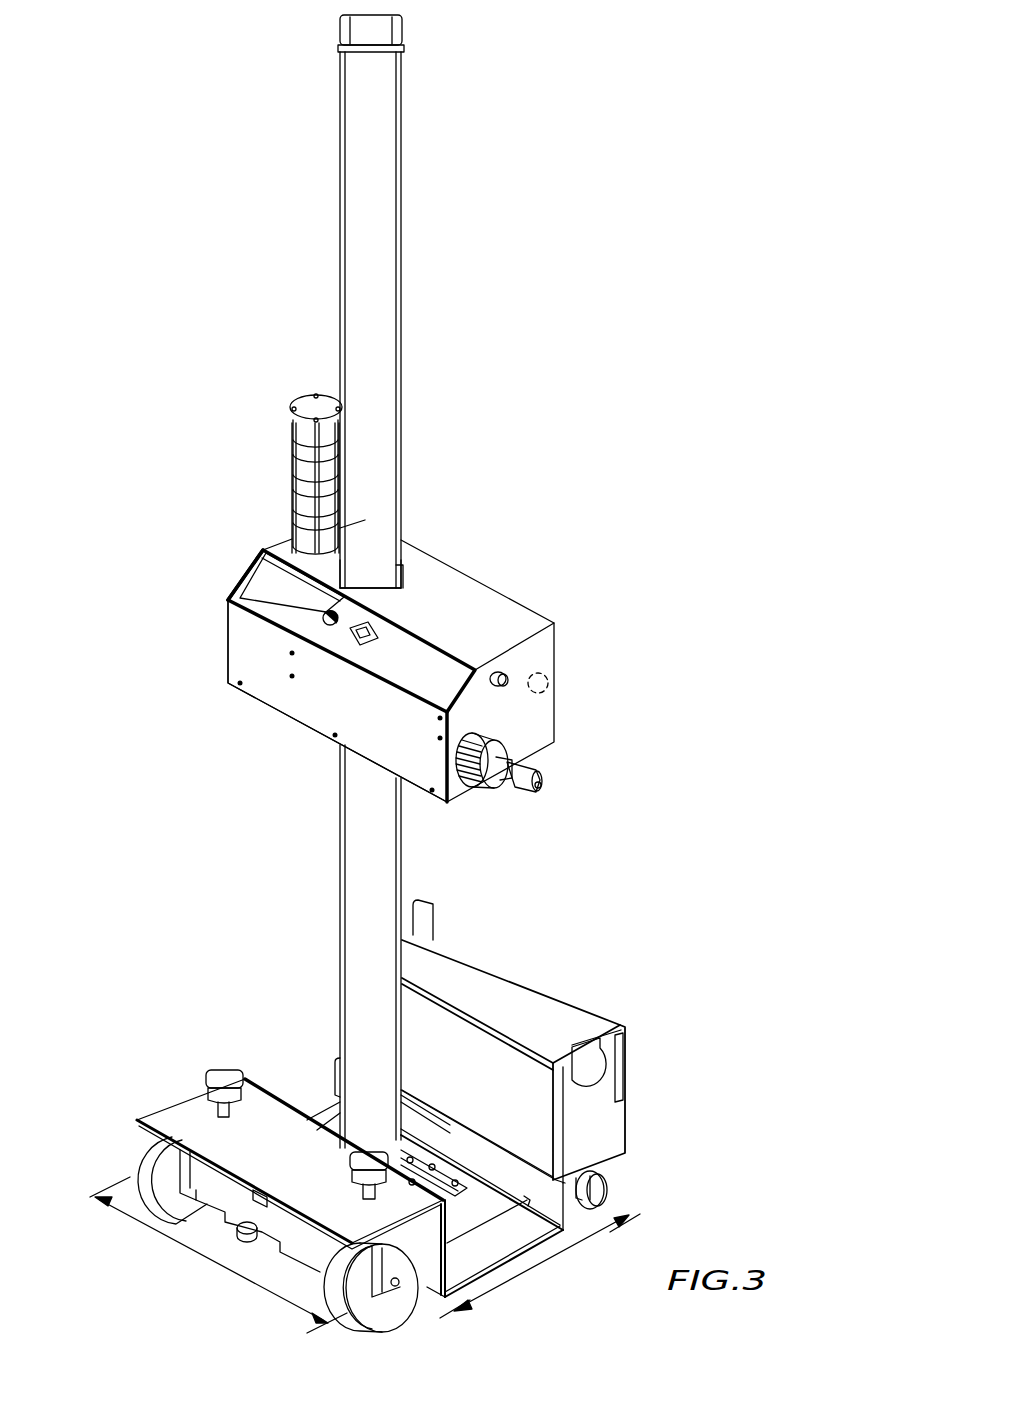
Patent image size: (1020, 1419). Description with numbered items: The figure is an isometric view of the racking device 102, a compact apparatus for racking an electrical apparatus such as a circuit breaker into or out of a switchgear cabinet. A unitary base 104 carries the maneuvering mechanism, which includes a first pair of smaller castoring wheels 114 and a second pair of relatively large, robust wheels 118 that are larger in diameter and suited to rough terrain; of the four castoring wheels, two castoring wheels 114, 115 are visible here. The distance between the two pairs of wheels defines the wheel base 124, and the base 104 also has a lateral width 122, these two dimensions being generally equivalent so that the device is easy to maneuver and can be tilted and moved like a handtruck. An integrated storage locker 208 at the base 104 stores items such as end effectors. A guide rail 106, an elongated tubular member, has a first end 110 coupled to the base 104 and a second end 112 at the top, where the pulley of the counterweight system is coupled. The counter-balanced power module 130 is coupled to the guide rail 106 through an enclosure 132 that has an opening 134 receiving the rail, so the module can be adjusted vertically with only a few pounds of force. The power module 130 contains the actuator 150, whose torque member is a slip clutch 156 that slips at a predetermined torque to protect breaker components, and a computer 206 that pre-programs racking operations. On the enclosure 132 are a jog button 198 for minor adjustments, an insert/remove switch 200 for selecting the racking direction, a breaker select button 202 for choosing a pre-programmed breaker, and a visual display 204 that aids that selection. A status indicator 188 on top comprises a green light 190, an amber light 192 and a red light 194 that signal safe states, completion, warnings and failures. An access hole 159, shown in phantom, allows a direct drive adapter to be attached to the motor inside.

The racking device 102 is at (640, 810).
The base 104 is at (658, 1052).
The guide rail 106 is at (388, 150).
The first end 110 is at (316, 1088).
The second end 112 is at (322, 50).
The castoring wheels 114 is at (592, 1183).
The castoring wheel 115 is at (247, 1232).
The second pair of wheels 118 is at (173, 1182).
The lateral width 122 is at (184, 1248).
The wheel base 124 is at (544, 1263).
The power module 130 is at (504, 565).
The enclosure 132 is at (270, 690).
The opening 134 is at (362, 590).
The actuator 150 is at (510, 722).
The torque member 156 is at (556, 776).
The access hole 159 is at (542, 664).
The status indicator 188 is at (296, 374).
The green light 190 is at (300, 437).
The amber light 192 is at (303, 470).
The red light 194 is at (305, 503).
The jog button 198 is at (504, 676).
The insert/remove switch 200 is at (372, 630).
The breaker select button 202 is at (330, 628).
The visual display 204 is at (258, 573).
The computer 206 is at (220, 594).
The storage locker 208 is at (476, 958).